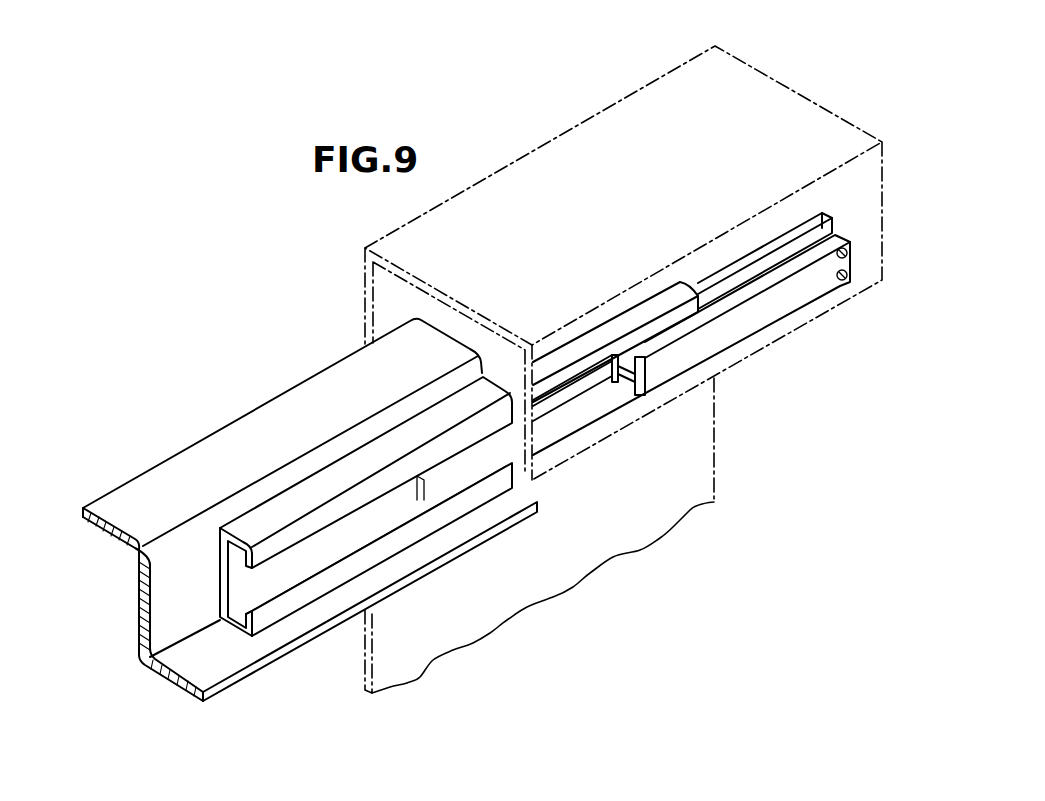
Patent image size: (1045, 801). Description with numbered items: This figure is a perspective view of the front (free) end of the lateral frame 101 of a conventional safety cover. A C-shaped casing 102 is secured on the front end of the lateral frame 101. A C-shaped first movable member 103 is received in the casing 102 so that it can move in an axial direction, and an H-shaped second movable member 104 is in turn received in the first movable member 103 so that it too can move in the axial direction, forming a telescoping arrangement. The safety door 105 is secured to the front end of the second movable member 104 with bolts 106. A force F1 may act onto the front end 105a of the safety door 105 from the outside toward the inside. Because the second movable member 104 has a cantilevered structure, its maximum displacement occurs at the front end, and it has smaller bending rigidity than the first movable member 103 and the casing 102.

The force F1 is at (625, 98).
The lateral frame 101 is at (263, 432).
The C-shaped casing 102 is at (273, 608).
The first movable member 103 is at (558, 432).
The second movable member 104 is at (735, 322).
The safety door 105 is at (543, 580).
The front end of the safety door 105a is at (700, 450).
The bolts 106 is at (848, 255).